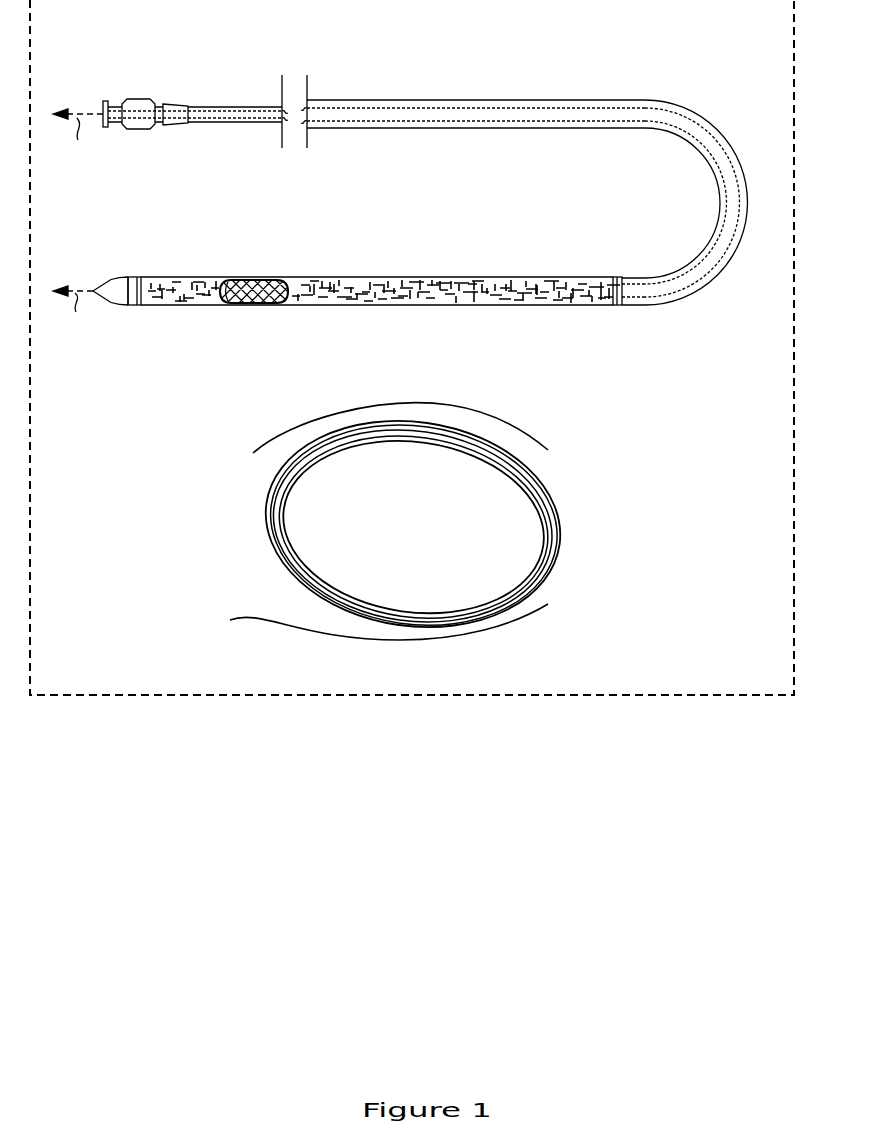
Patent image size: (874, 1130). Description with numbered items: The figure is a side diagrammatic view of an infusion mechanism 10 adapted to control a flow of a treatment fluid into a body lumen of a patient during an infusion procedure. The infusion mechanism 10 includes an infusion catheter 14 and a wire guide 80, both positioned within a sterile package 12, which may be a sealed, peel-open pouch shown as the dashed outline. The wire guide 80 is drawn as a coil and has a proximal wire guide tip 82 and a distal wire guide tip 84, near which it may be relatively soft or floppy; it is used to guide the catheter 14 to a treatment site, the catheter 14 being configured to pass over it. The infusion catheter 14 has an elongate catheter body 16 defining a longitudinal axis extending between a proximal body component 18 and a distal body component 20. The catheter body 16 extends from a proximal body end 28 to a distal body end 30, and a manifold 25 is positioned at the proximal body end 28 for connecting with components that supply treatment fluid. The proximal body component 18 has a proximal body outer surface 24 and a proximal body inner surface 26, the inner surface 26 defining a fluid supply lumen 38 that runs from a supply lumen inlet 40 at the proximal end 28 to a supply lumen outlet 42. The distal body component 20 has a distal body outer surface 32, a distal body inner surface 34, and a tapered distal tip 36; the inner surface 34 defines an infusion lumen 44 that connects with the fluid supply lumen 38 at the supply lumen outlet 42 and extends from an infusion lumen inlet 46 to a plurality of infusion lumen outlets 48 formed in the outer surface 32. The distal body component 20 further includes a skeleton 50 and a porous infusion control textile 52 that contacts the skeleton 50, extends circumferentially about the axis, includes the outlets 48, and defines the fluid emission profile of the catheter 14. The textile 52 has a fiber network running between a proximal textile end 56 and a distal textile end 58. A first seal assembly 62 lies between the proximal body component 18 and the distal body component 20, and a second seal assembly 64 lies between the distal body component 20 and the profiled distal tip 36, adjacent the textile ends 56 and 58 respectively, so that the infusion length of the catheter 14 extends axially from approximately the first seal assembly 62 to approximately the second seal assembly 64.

The infusion mechanism 10 is at (435, 347).
The sterile package 12 is at (794, 175).
The infusion catheter 14 is at (406, 199).
The elongate catheter body 16 is at (422, 100).
The proximal body component 18 is at (422, 128).
The distal body component 20 is at (380, 293).
The proximal body outer surface 24 is at (722, 127).
The manifold 25 is at (142, 101).
The proximal body inner surface 26 is at (727, 250).
The proximal body end 28 is at (97, 131).
The distal body end 30 is at (337, 290).
The distal body outer surface 32 is at (368, 305).
The distal body inner surface 34 is at (227, 301).
The tapered distal tip 36 is at (112, 301).
The fluid supply lumen 38 is at (640, 115).
The supply lumen inlet 40 is at (104, 104).
The supply lumen outlet 42 is at (636, 299).
The infusion lumen 44 is at (249, 293).
The infusion lumen inlet 46 is at (638, 290).
The infusion lumen outlets 48 is at (182, 280).
The skeleton 50 is at (283, 303).
The porous infusion control textile 52 is at (342, 290).
The proximal textile end 56 is at (616, 277).
The distal textile end 58 is at (141, 305).
The first seal assembly 62 is at (616, 305).
The second seal assembly 64 is at (137, 277).
The wire guide 80 is at (413, 534).
The proximal wire guide tip 82 is at (257, 455).
The distal wire guide tip 84 is at (232, 623).